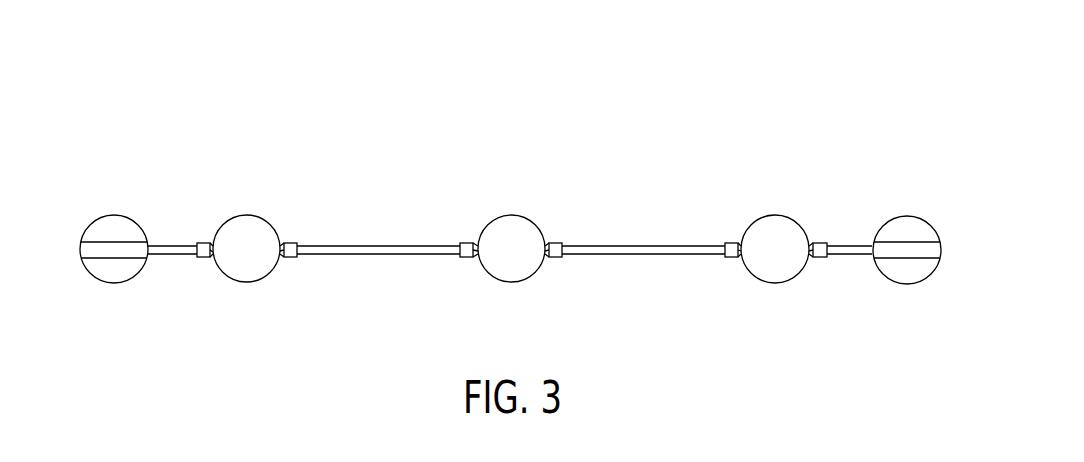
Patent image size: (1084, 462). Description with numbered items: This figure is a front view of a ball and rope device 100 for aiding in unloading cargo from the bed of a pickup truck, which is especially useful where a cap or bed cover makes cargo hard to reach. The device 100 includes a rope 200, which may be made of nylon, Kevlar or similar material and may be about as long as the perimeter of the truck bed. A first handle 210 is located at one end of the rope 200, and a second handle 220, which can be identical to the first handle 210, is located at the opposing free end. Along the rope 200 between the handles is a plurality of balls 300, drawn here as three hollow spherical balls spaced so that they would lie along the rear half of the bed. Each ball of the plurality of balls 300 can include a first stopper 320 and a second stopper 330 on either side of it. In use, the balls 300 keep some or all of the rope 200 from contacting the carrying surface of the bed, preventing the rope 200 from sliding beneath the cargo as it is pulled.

The ball and rope device 100 is at (788, 92).
The rope 200 is at (620, 218).
The first handle 210 is at (62, 224).
The second handle 220 is at (958, 228).
The plurality of balls 300 is at (462, 200).
The first stopper 320 is at (726, 290).
The second stopper 330 is at (823, 300).